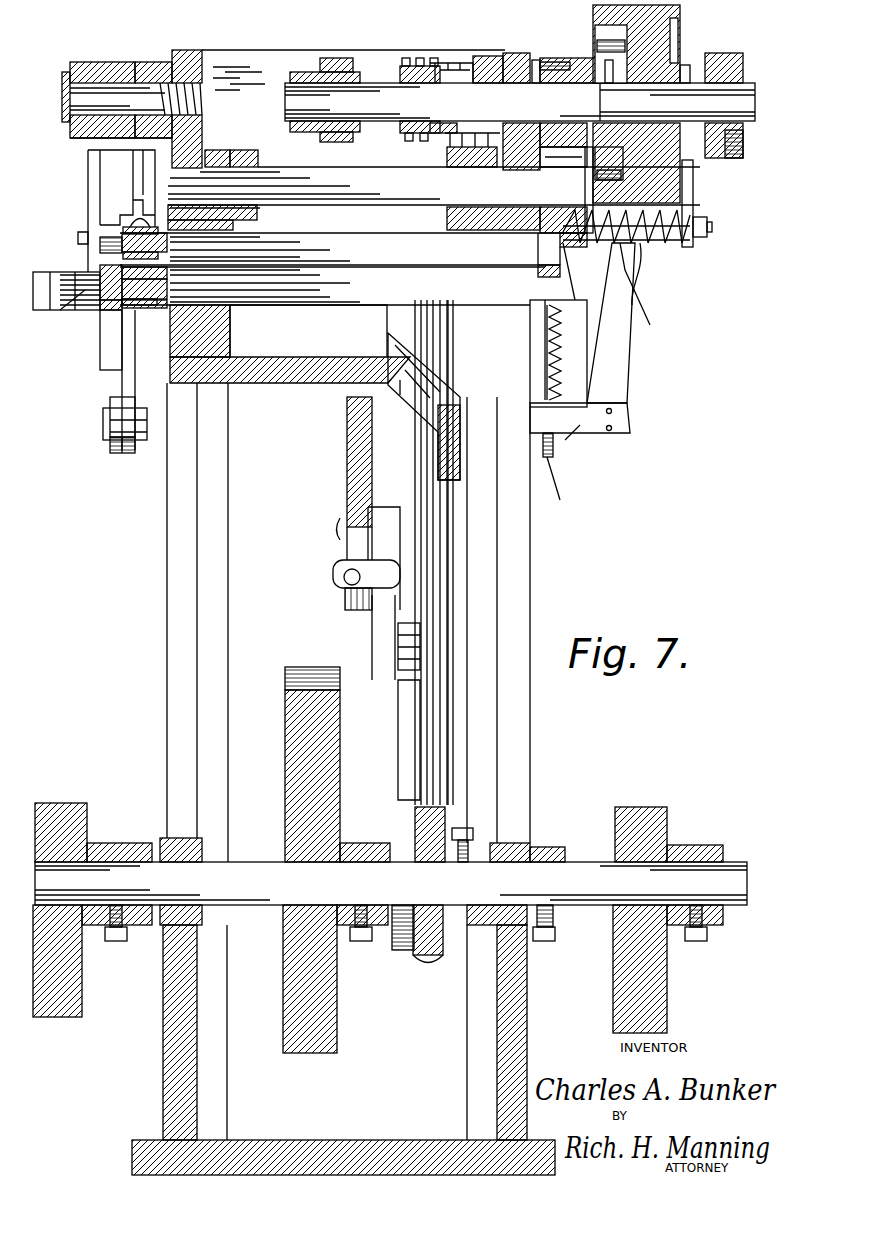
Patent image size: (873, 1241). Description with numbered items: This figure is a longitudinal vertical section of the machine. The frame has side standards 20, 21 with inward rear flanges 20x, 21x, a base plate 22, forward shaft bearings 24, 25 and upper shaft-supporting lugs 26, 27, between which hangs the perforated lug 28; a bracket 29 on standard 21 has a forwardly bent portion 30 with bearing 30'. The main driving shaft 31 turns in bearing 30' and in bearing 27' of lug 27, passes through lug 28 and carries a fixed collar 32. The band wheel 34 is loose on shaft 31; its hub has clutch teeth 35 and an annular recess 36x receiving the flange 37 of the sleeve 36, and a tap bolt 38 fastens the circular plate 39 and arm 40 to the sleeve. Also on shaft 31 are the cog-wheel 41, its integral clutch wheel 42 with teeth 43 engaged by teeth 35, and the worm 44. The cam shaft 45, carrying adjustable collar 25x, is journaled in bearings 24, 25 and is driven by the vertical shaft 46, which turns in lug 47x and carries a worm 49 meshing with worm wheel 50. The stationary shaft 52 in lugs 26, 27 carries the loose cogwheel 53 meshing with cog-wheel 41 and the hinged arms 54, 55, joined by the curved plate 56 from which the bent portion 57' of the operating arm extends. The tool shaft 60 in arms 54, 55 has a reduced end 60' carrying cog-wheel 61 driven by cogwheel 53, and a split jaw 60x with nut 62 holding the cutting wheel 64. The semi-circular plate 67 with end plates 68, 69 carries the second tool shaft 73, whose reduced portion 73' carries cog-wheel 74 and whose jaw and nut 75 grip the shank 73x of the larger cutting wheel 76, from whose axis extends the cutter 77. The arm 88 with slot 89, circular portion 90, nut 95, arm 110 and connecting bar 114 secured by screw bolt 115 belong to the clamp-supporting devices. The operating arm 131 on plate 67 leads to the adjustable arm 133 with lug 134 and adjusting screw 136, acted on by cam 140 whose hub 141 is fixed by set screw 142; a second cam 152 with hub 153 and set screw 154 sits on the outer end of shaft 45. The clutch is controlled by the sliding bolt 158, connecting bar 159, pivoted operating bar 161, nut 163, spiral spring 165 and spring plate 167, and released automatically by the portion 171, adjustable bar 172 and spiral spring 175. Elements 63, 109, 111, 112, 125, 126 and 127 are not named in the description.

The side plate or standard 20 is at (172, 575).
The flange 20x is at (218, 592).
The side plate or standard 21 is at (520, 565).
The flange 21x is at (470, 988).
The base plate 22 is at (330, 1140).
The shaft bearing 24 is at (160, 840).
The shaft bearing 25 is at (520, 843).
The adjustable collar 25x is at (568, 847).
The shaft-supporting block or lug 26 is at (182, 50).
The shaft-supporting block or lug 27 is at (508, 47).
The shaft opening or bearing 27' is at (466, 51).
The perforated lug 28 is at (332, 58).
The bracket 29 is at (555, 58).
The outer portion of bracket 30 is at (729, 159).
The shaft opening or bearing 30' is at (737, 150).
The main driving rotary shaft 31 is at (372, 95).
The fixed collar 32 is at (292, 72).
The band wheel 34 is at (680, 18).
The clutch teeth 35 is at (600, 62).
The sleeve 36 is at (688, 65).
The annular recess 36x is at (609, 163).
The circular flange 37 is at (597, 102).
The tap bolt 38 is at (718, 55).
The circular plate 39 is at (690, 167).
The arm 40 is at (693, 190).
The cog-wheel 41 is at (536, 58).
The clutch wheel 42 is at (607, 85).
The clutch teeth 43 is at (600, 128).
The worm 44 is at (420, 58).
The rotary cam shaft 45 is at (590, 905).
The vertical rotary shaft 46 is at (425, 500).
The bearing or lug 47x is at (452, 955).
The worm 49 is at (395, 940).
The worm wheel 50 is at (420, 960).
The stationary shaft 52 is at (380, 192).
The cogwheel 53 is at (560, 160).
The plate or arm 54 is at (218, 150).
The plate or arm 55 is at (485, 160).
The connecting plate 56 is at (277, 163).
The bent portion of operating arm 57' is at (402, 398).
The rotary tool-carrying shaft 60 is at (353, 235).
The reduced end portion 60' is at (542, 249).
The split jaw portion 60x is at (168, 240).
The small cog-wheel 61 is at (560, 355).
The nut 62 is at (123, 230).
The nut 63 is at (100, 240).
The milling or cutting wheel 64 is at (123, 255).
The semi-circular plate or casting 67 is at (318, 380).
The end plate 68 is at (540, 352).
The end plate 69 is at (175, 348).
The tool-carrying rotary shaft 73 is at (332, 312).
The reduced portion 73' is at (531, 280).
The shank 73x is at (105, 305).
The cog-wheel 74 is at (612, 320).
The nut 75 is at (135, 305).
The cutting wheel 76 is at (100, 268).
The cutter 77 is at (50, 320).
The narrow plate or arm 88 is at (128, 382).
The slot 89 is at (120, 406).
The circular portion 90 is at (100, 360).
The nut 95 is at (40, 292).
The hub 109 is at (146, 62).
The arm 110 is at (102, 60).
The hub 111 is at (78, 138).
The hub 112 is at (108, 62).
The connecting bar 114 is at (115, 455).
The screw bolt 115 is at (134, 453).
The flange 125 is at (62, 803).
The hub 126 is at (100, 843).
The bolt 127 is at (117, 943).
The operating bar or arm 131 is at (347, 452).
The adjustable plate or arm 133 is at (385, 695).
The lug 134 is at (343, 575).
The adjusting screw 136 is at (350, 588).
The cam 140 is at (292, 995).
The hub 141 is at (285, 851).
The set screw 142 is at (360, 945).
The cam 152 is at (633, 807).
The hub 153 is at (695, 845).
The set screw 154 is at (696, 943).
The sliding bolt 158 is at (647, 285).
The connecting bar 159 is at (650, 274).
The vertical operating bar 161 is at (618, 393).
The nut 163 is at (700, 237).
The spiral spring 165 is at (605, 243).
The flat spring plate 167 is at (548, 457).
The bent portion of bar 171 is at (553, 491).
The straight bar 172 is at (553, 460).
The spiral spring 175 is at (560, 375).